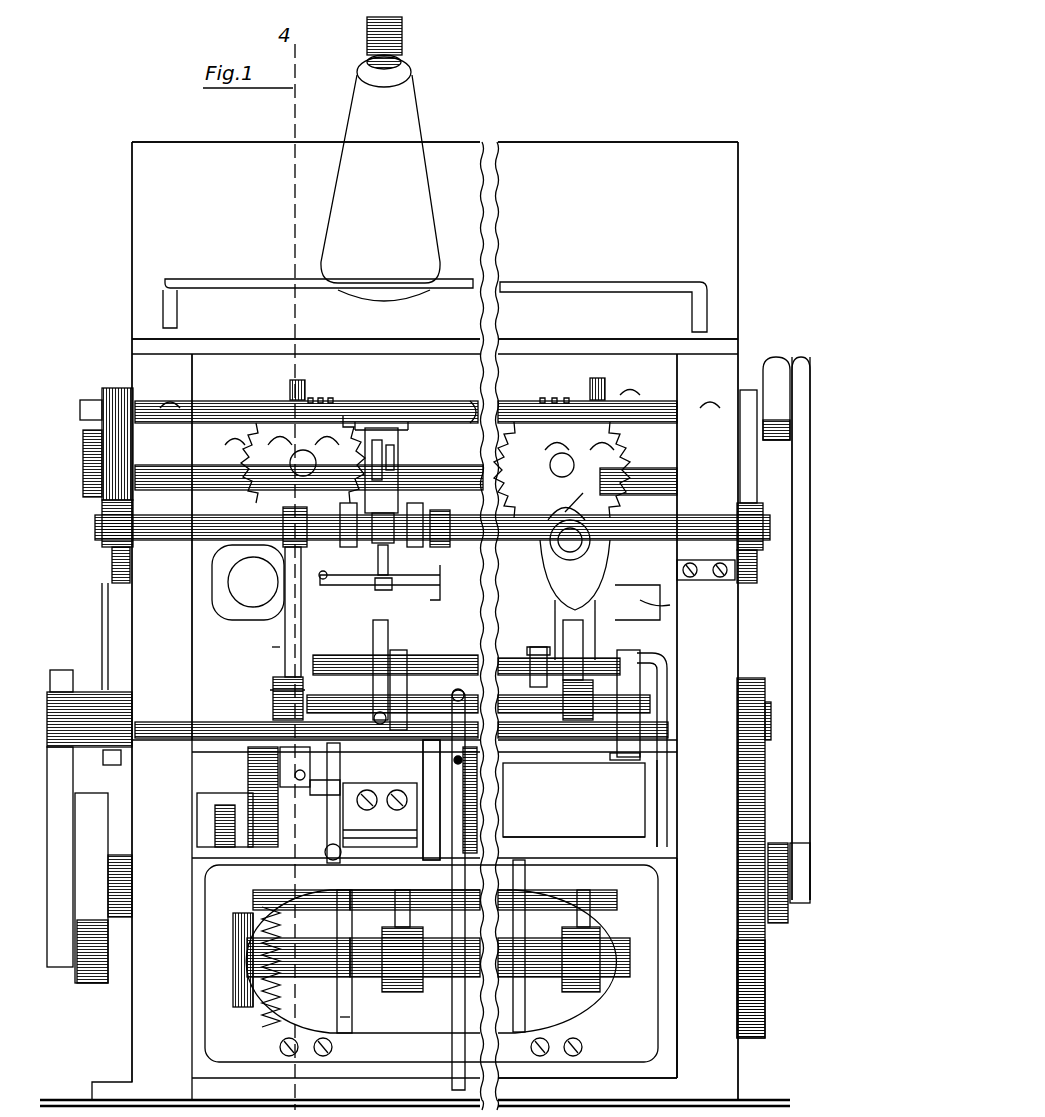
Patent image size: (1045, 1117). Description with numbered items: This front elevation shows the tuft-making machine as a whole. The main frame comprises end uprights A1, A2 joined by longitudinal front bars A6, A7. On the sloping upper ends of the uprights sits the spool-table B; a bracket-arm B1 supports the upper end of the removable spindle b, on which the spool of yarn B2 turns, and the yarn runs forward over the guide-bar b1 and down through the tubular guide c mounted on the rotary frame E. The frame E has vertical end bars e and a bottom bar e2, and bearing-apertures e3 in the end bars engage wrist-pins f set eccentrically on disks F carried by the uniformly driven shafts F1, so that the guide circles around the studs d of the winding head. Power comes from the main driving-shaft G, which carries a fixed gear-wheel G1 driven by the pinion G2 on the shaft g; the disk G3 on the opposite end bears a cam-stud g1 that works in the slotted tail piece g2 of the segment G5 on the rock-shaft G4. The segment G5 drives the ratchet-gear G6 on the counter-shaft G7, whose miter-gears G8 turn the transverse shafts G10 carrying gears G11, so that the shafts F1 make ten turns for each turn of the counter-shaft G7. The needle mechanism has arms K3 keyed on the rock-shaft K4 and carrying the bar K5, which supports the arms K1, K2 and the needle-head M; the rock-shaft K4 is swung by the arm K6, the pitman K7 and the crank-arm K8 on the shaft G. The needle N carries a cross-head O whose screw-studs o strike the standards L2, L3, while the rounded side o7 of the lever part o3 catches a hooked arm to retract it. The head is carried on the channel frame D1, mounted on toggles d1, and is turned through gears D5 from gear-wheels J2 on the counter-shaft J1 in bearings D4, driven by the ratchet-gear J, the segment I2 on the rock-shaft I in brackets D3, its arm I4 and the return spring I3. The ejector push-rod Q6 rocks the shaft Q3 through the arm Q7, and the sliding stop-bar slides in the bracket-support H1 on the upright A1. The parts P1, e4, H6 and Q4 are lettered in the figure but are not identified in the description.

The spool-table B is at (258, 200).
The bracket-arm B1 is at (402, 32).
The removable spindle b is at (402, 62).
The spool of yarn B2 is at (412, 134).
The guide-bar b1 is at (240, 288).
The end upright A1 is at (738, 262).
The end upright A2 is at (132, 252).
The longitudinal front bar A6 is at (207, 547).
The longitudinal front bar A7 is at (640, 1014).
The rock-shaft K4 is at (418, 406).
The counter-shaft G7 is at (432, 470).
The horizontal bar K5 is at (768, 522).
The ratchet-gear G6 is at (100, 453).
The segment G5 is at (105, 604).
The gear G11 is at (265, 432).
The transversely-arranged shaft G10 is at (307, 456).
The miter-gear G8 is at (302, 396).
The slide P1 is at (402, 468).
The needle-head M is at (425, 518).
The cross-head O is at (462, 566).
The arm K2 is at (445, 600).
The screw-stud o is at (323, 575).
The disk F is at (267, 568).
The shaft F1 is at (630, 617).
The bearing-aperture e3 is at (575, 552).
The cam arm e4 is at (562, 512).
The wrist-pin f is at (579, 491).
The bracket-support H1 is at (706, 582).
The arm H6 is at (655, 610).
The parallel arm K3 is at (752, 480).
The arm K6 is at (773, 356).
The pitman K7 is at (790, 634).
The driving-pinion G2 is at (766, 680).
The shaft g is at (766, 723).
The crank-arm K8 is at (787, 903).
The gear-wheel G1 is at (765, 968).
The needle N is at (392, 652).
The bottom bar e2 is at (433, 660).
The shaft Q3 is at (503, 653).
The end bar e is at (282, 649).
The frame E is at (578, 644).
The arm K1 is at (293, 644).
The rock-shaft G4 is at (217, 700).
The tubular guide c is at (373, 688).
The rounded front side o7 is at (467, 694).
The upper member o3 is at (467, 744).
The arm Q7 is at (650, 661).
The post Q4 is at (640, 708).
The push-rod Q6 is at (670, 813).
The gear D5 is at (260, 763).
The gear-wheel J2 is at (247, 800).
The stud d is at (330, 787).
The standard L3 is at (333, 820).
The standard L2 is at (430, 824).
The ratchet-gear J is at (458, 800).
The frame D1 is at (574, 800).
The counter-shaft J1 is at (547, 838).
The bracket-bearing D4 is at (388, 835).
The slotted tail piece g2 is at (47, 793).
The cam-stud g1 is at (73, 840).
The main driving-shaft G is at (132, 870).
The disk G3 is at (108, 947).
The bracket D3 is at (597, 901).
The rock-shaft I is at (347, 948).
The toggle d1 is at (340, 1018).
The rigid arm I4 is at (253, 1007).
The segment I2 is at (280, 990).
The contractile spring I3 is at (280, 1010).